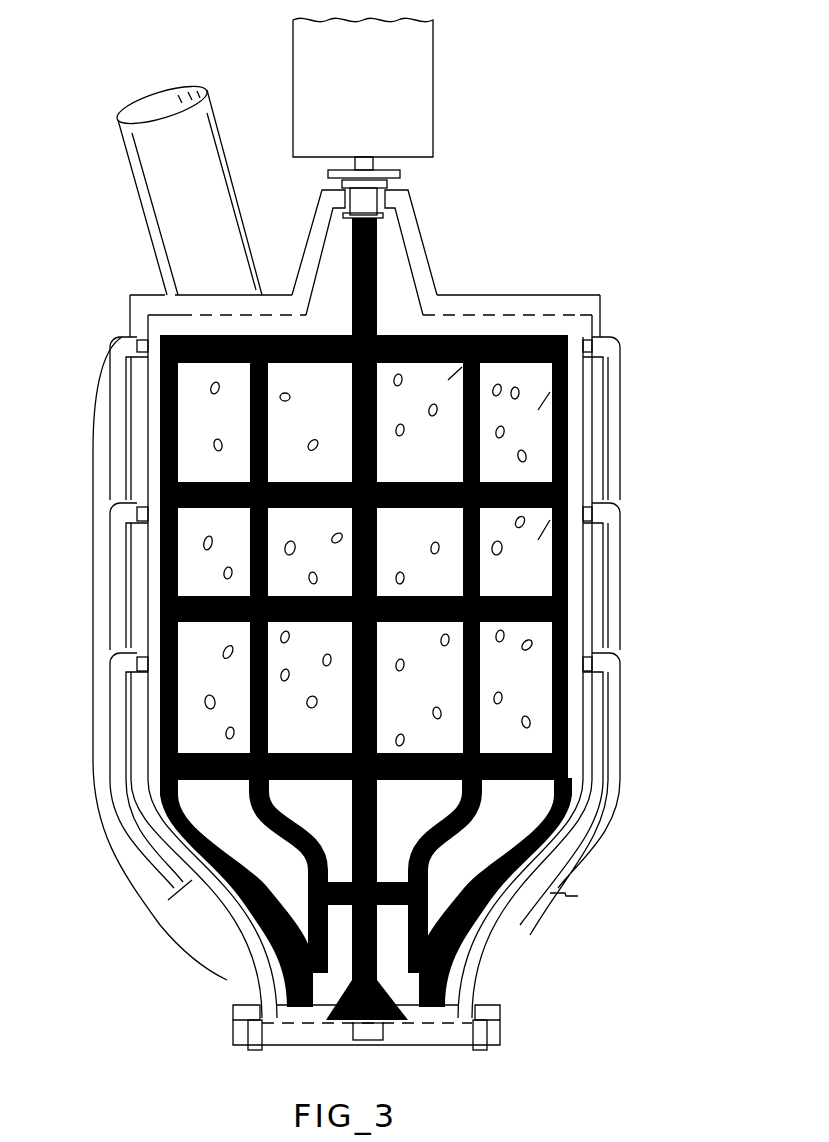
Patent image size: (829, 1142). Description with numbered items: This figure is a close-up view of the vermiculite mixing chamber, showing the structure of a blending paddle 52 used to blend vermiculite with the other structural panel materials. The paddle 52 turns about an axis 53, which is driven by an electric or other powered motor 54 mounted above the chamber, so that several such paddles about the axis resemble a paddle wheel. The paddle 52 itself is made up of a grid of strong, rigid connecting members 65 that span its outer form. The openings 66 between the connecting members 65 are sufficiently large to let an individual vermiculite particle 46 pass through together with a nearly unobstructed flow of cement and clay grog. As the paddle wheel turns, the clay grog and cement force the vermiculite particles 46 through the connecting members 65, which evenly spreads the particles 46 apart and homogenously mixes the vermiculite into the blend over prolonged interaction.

The vermiculite particle 46 is at (226, 733).
The blending paddle 52 is at (97, 752).
The axis 53 is at (377, 277).
The motor 54 is at (422, 117).
The connecting members 65 is at (200, 480).
The openings 66 is at (567, 497).